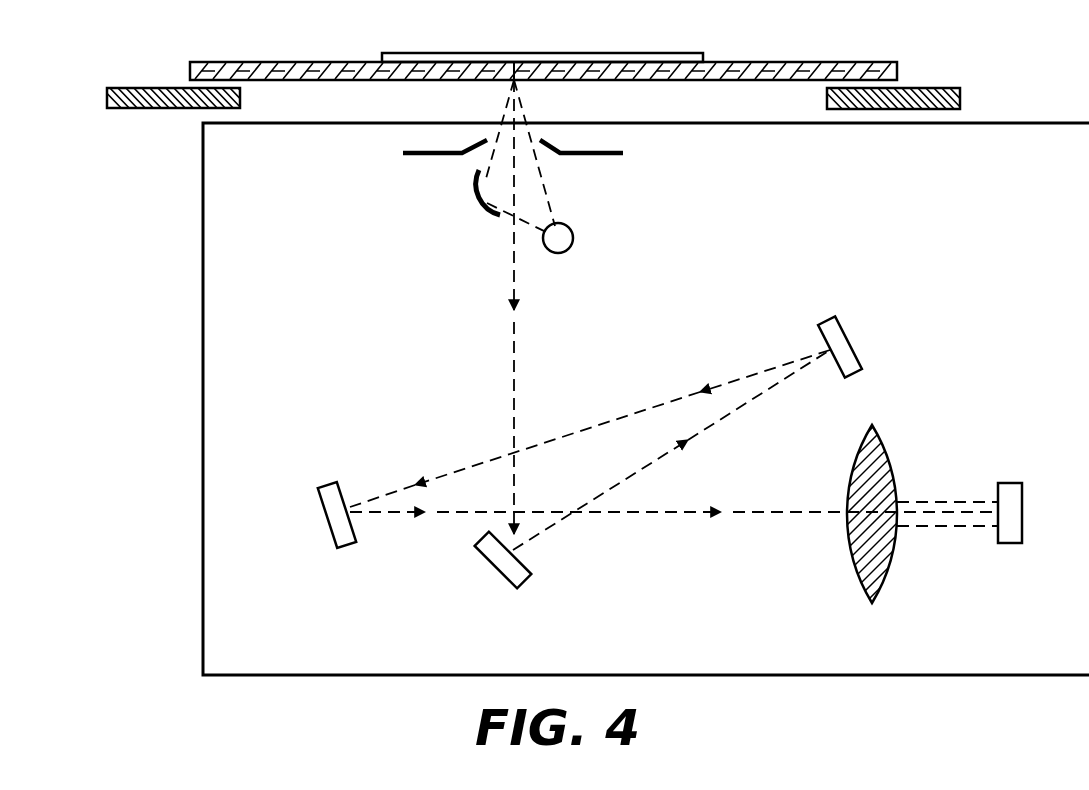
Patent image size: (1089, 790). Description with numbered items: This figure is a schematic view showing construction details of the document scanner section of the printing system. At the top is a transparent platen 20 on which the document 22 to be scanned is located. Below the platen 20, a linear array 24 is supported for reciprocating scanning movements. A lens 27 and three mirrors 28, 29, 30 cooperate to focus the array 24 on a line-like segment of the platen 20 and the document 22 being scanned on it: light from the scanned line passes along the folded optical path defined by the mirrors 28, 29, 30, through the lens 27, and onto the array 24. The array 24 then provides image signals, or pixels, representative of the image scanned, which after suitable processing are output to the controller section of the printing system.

The transparent platen 20 is at (305, 81).
The document 22 is at (598, 53).
The linear array 24 is at (1010, 483).
The lens 27 is at (885, 577).
The mirror 28 is at (505, 578).
The mirror 29 is at (850, 342).
The mirror 30 is at (333, 527).